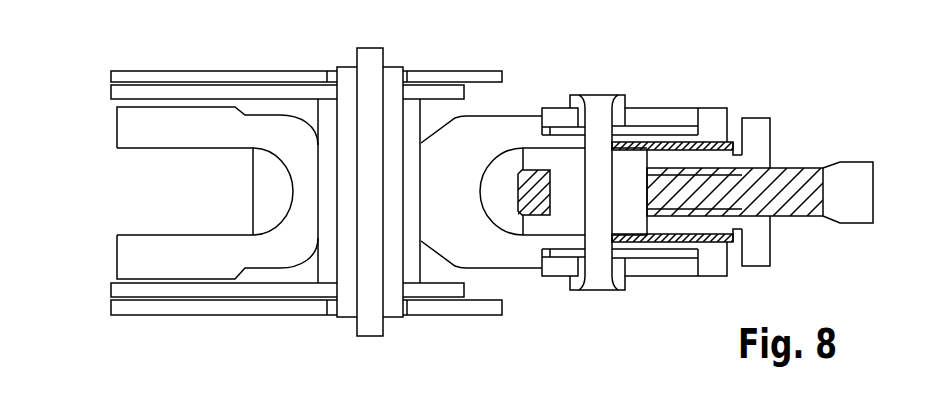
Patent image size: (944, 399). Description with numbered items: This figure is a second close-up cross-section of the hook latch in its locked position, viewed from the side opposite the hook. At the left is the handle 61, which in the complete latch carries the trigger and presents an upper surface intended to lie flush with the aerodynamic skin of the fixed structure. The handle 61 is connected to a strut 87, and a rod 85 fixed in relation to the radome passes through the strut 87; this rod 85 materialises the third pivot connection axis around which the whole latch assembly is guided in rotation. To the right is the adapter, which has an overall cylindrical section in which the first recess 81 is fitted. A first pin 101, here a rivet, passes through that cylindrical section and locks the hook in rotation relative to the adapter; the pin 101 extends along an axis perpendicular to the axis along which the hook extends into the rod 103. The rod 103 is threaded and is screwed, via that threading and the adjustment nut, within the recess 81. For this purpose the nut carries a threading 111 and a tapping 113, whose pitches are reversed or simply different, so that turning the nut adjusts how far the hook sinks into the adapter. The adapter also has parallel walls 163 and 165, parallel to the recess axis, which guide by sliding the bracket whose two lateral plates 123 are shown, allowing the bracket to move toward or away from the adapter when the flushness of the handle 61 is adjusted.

The handle 61 is at (218, 70).
The rod 85 is at (368, 46).
The strut 87 is at (396, 65).
The first recess 81 is at (507, 207).
The first pin 101 is at (595, 108).
The wall 163 is at (555, 109).
The lateral plate 123 is at (643, 110).
The wall 165 is at (688, 108).
The threading 111 is at (717, 240).
The tapping 113 is at (756, 190).
The rod 103 is at (803, 193).